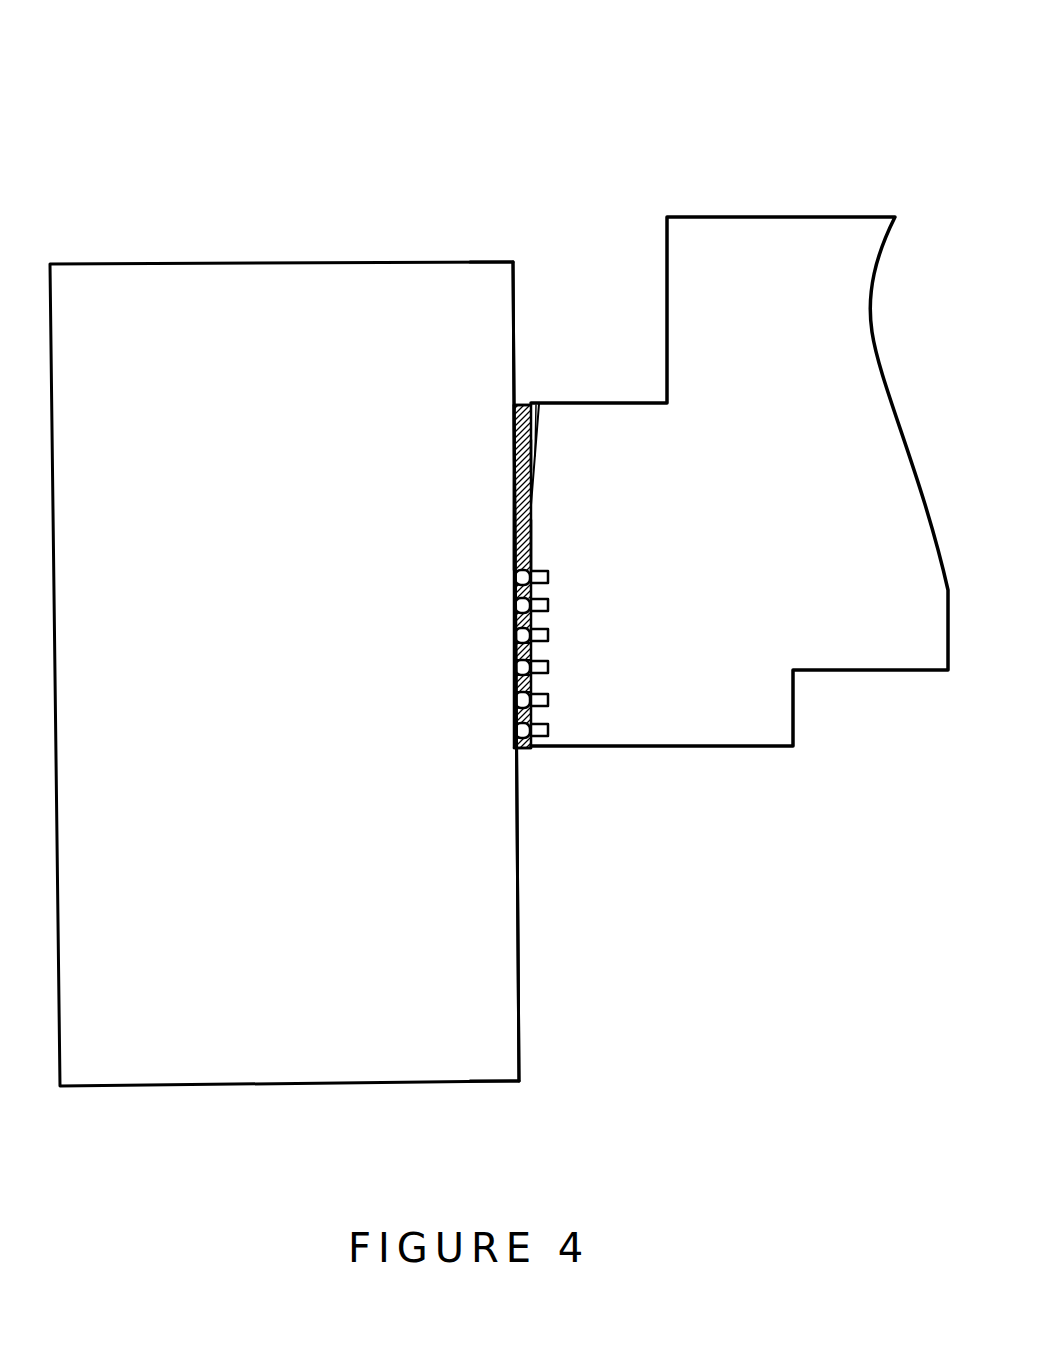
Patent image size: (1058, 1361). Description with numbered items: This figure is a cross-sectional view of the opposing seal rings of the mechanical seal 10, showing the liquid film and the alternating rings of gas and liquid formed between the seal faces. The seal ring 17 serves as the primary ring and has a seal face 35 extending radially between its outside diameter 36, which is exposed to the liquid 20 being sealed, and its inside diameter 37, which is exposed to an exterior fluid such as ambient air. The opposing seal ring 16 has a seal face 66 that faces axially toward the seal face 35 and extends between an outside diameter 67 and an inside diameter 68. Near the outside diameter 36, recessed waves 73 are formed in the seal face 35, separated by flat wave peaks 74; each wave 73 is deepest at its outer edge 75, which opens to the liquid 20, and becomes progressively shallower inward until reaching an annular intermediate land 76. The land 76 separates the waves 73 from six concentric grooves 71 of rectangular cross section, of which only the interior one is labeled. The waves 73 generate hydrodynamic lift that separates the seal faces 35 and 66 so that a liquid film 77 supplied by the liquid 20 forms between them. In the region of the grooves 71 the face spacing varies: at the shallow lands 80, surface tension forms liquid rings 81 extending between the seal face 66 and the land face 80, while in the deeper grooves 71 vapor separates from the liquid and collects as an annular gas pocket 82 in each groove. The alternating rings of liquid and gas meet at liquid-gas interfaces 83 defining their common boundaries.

The mechanical seal 10 is at (211, 130).
The liquid being sealed 20 is at (525, 55).
The seal ring 16 is at (270, 1055).
The seal ring 17 is at (773, 725).
The seal face 66 is at (522, 1027).
The outside diameter 67 is at (517, 262).
The inside diameter 68 is at (519, 1082).
The seal face 35 is at (533, 536).
The outside diameter 36 is at (527, 402).
The inside diameter 37 is at (532, 750).
The waves 73 is at (538, 428).
The wave peaks 74 is at (538, 453).
The outer edge 75 is at (534, 405).
The intermediate land 76 is at (533, 553).
The liquid film 77 is at (513, 445).
The concentric grooves 71 is at (549, 577).
The lands 80 is at (533, 588).
The gas pocket 82 is at (549, 636).
The liquid rings 81 is at (513, 622).
The liquid-gas interfaces 83 is at (520, 668).